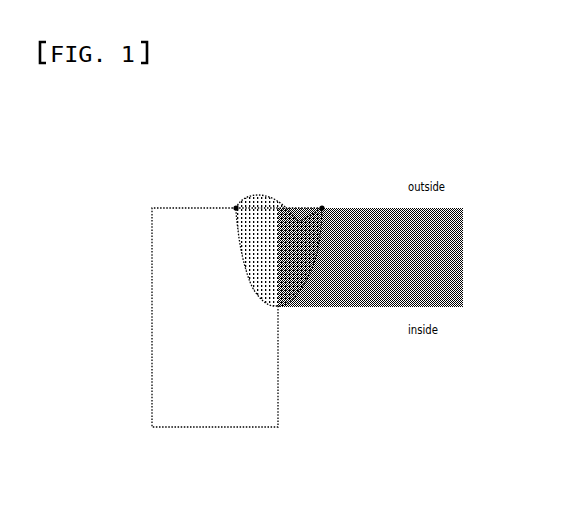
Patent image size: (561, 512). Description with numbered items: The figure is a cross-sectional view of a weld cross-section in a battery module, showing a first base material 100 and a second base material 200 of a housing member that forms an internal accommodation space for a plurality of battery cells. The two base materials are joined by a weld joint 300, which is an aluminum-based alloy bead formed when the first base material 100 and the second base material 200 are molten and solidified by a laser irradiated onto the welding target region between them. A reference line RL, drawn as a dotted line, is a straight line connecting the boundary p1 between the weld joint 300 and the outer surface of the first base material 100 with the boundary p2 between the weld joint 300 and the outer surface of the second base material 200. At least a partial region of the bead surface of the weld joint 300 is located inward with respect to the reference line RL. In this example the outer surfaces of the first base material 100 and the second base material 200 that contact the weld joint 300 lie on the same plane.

The first base material 100 is at (151, 326).
The second base material 200 is at (464, 263).
The weld joint 300 is at (258, 194).
The reference line RL is at (299, 206).
The boundary p1 is at (235, 205).
The boundary p2 is at (323, 205).